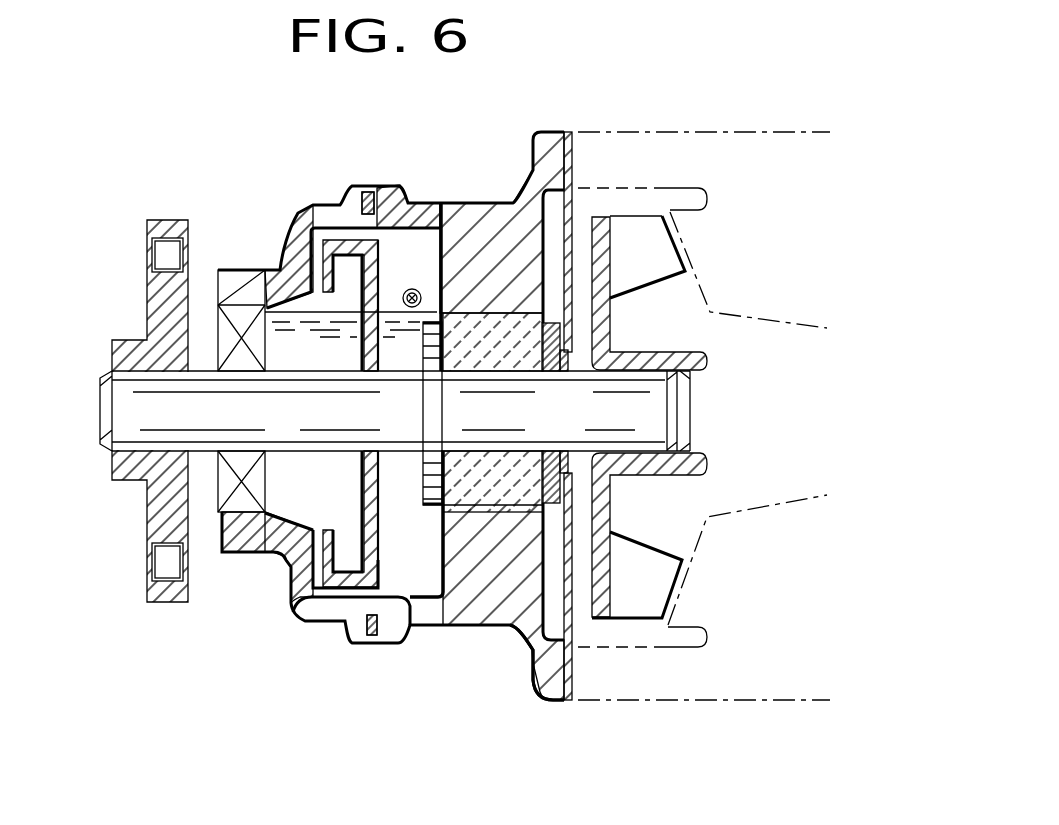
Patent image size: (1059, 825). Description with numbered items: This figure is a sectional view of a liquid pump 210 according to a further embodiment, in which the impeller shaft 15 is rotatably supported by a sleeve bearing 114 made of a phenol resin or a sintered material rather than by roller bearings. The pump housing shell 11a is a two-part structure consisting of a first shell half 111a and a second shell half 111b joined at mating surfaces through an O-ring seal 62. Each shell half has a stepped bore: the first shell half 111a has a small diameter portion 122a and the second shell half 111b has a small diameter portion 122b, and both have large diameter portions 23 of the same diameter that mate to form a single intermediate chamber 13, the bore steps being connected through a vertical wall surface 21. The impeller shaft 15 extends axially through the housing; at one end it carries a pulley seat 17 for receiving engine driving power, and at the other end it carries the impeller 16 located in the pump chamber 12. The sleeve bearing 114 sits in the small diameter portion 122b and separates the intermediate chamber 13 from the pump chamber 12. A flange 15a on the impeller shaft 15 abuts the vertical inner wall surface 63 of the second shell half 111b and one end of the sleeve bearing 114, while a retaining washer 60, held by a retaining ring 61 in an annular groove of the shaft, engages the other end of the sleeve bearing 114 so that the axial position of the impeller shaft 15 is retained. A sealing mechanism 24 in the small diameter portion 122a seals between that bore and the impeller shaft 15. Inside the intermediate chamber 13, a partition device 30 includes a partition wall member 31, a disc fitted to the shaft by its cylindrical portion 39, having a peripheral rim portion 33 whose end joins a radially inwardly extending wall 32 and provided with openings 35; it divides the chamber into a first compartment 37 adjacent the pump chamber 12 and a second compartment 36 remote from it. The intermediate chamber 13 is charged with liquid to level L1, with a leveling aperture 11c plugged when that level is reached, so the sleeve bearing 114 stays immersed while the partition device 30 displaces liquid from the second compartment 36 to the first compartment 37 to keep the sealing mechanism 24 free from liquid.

The pump housing shell 11a is at (335, 186).
The leveling aperture 11c is at (387, 280).
The pump chamber 12 is at (578, 643).
The intermediate chamber 13 is at (305, 280).
The impeller shaft 15 is at (313, 425).
The flange 15a is at (442, 230).
The impeller 16 is at (656, 578).
The pulley seat 17 is at (170, 228).
The vertical wall surface 21 is at (345, 570).
The large diameter portion 23 is at (420, 615).
The sealing mechanism 24 is at (230, 488).
The partition device 30 is at (413, 289).
The partition wall member 31 is at (380, 500).
The radially inwardly extending wall 32 is at (293, 232).
The peripheral rim portion 33 is at (343, 243).
The openings 35 is at (362, 637).
The second compartment 36 is at (300, 302).
The first compartment 37 is at (483, 600).
The cylindrical portion 39 is at (323, 460).
The retaining washer 60 is at (553, 490).
The retaining ring 61 is at (573, 467).
The O-ring seal 62 is at (376, 206).
The vertical inner wall surface 63 is at (440, 546).
The first shell half 111a is at (262, 555).
The second shell half 111b is at (507, 635).
The sleeve bearing 114 is at (520, 300).
The small diameter portion 122a is at (224, 548).
The small diameter portion 122b is at (477, 318).
The liquid pump 210 is at (295, 192).
The liquid level L1 is at (325, 280).